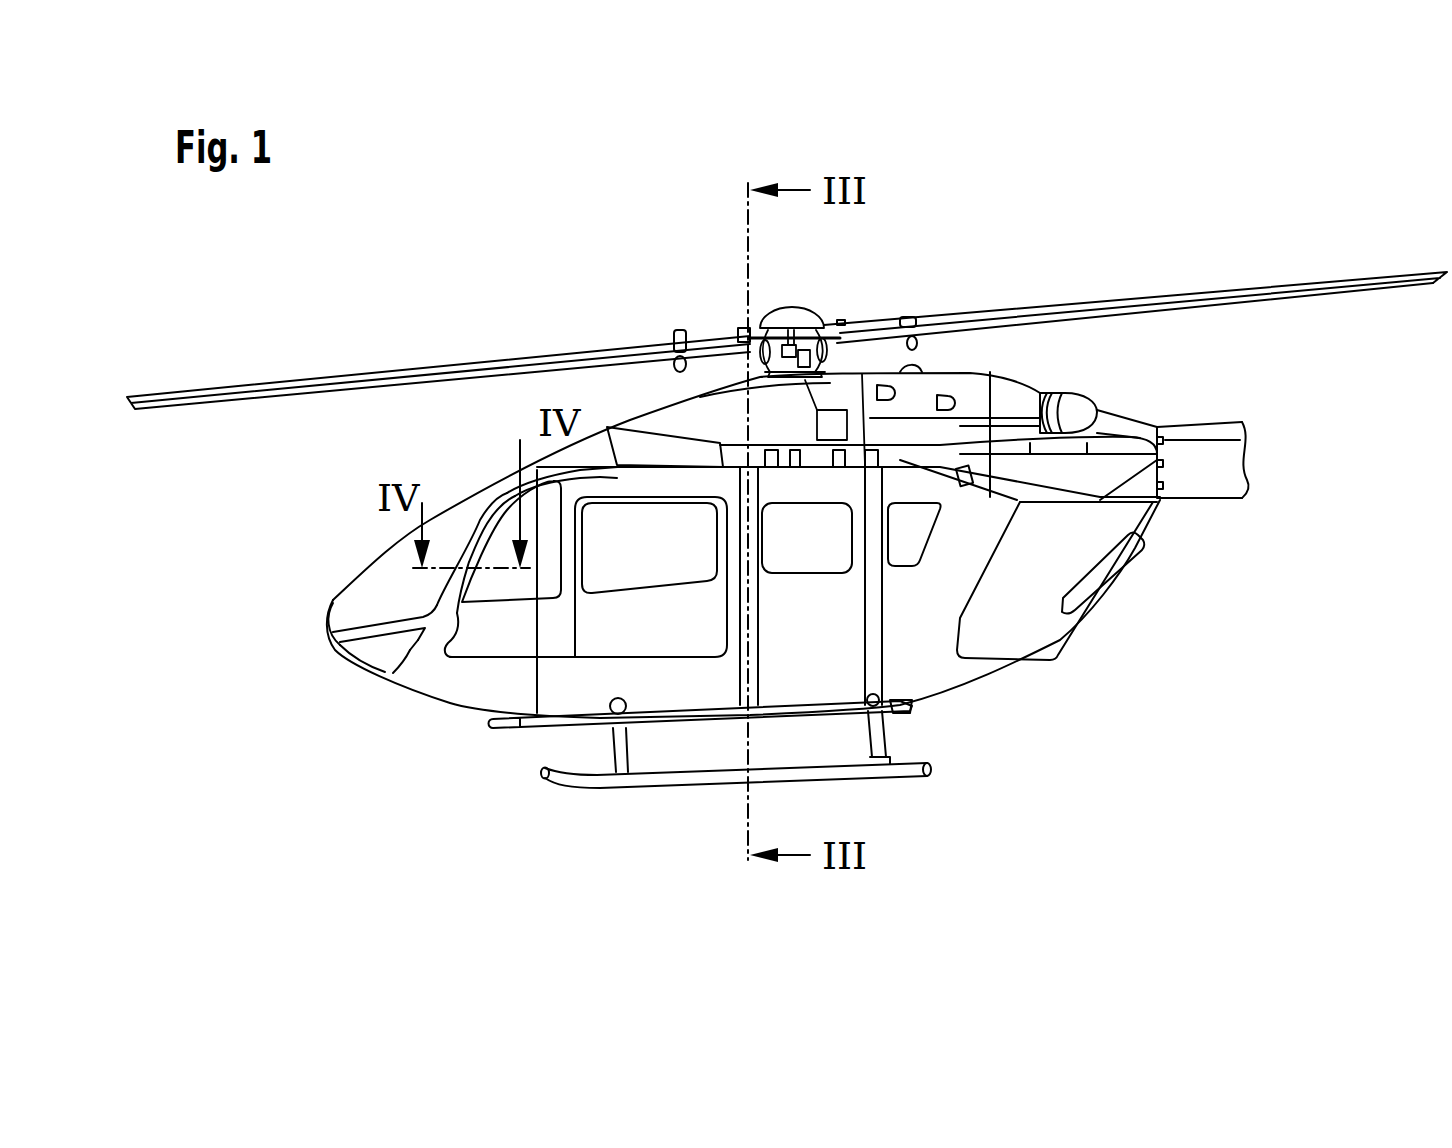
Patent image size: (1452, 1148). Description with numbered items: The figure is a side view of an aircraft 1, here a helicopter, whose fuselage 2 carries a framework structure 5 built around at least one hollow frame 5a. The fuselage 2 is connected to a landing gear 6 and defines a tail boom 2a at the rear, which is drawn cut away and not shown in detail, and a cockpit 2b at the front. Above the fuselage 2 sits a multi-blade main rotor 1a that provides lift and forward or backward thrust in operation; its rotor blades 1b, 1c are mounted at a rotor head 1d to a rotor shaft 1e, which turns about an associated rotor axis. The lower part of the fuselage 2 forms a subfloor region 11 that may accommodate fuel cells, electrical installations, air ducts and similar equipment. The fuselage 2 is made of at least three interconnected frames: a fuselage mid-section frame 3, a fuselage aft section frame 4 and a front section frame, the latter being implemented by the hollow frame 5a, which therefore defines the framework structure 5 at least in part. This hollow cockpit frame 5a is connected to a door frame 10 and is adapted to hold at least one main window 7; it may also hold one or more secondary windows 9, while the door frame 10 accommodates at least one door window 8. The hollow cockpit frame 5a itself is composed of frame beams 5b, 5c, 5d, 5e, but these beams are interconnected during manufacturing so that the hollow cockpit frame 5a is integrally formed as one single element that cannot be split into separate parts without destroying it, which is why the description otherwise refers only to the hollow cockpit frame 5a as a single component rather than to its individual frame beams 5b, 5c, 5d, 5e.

The aircraft 1 is at (396, 296).
The multi-blade main rotor 1a is at (1055, 298).
The rotor blade 1b is at (290, 384).
The rotor blade 1c is at (1268, 298).
The rotor head 1d is at (827, 310).
The rotor shaft 1e is at (833, 368).
The fuselage 2 is at (983, 675).
The tail boom 2a is at (1213, 467).
The cockpit 2b is at (495, 593).
The fuselage mid-section frame 3 is at (737, 672).
The fuselage aft section frame 4 is at (857, 653).
The framework structure 5 is at (315, 633).
The hollow frame 5a is at (442, 590).
The frame beam 5b is at (328, 600).
The frame beam 5c is at (383, 628).
The frame beam 5d is at (400, 637).
The frame beam 5e is at (477, 550).
The landing gear 6 is at (582, 797).
The main window 7 is at (457, 527).
The door window 8 is at (447, 622).
The secondary window 9 is at (375, 648).
The door frame 10 is at (424, 634).
The subfloor region 11 is at (913, 695).